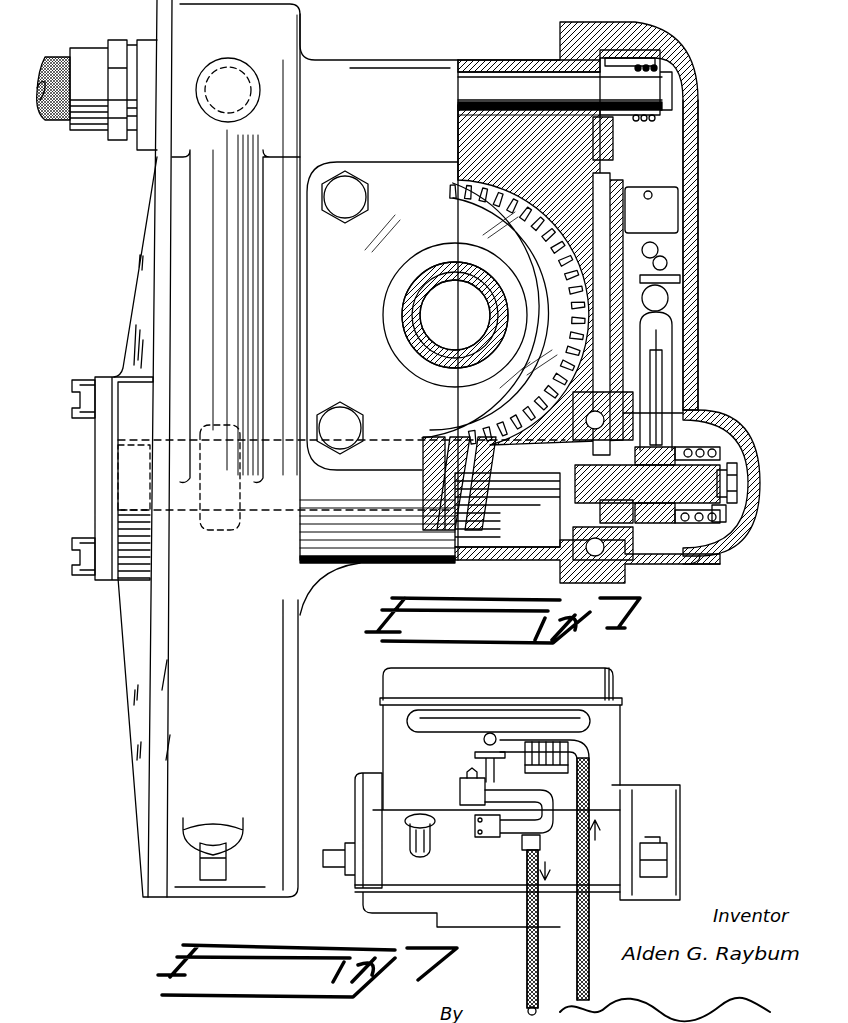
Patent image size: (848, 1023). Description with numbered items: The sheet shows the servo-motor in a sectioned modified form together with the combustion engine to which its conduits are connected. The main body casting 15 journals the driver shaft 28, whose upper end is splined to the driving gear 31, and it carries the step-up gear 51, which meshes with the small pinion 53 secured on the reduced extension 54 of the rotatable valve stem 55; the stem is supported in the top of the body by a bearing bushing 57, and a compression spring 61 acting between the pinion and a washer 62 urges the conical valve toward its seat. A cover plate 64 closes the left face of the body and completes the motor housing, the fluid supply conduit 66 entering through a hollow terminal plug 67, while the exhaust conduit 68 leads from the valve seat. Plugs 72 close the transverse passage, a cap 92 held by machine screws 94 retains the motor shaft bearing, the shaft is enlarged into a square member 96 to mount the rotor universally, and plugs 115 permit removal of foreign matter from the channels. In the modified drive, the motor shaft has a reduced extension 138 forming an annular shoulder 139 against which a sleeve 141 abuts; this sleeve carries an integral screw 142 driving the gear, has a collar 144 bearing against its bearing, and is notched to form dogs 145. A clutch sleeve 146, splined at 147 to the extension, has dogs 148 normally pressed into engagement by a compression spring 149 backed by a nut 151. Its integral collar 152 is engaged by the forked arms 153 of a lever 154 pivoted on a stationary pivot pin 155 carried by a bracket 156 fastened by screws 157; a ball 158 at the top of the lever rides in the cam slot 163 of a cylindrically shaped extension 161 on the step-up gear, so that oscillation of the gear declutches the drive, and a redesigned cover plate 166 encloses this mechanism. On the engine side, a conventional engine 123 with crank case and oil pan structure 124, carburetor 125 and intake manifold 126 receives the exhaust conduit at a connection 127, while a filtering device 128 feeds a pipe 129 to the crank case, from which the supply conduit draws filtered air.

In FIG. 9, the main body casting 15 is at (378, 73).
In FIG. 9, the driver shaft 28 is at (488, 296).
In FIG. 9, the driving gear 31 is at (560, 432).
In FIG. 9, the step-up gear 51 is at (620, 155).
In FIG. 9, the small pinion 53 is at (638, 50).
In FIG. 9, the reduced extension 54 is at (688, 64).
In FIG. 9, the rotatable valve stem 55 is at (560, 97).
In FIG. 9, the bearing bushing 57 is at (506, 68).
In FIG. 9, the compression spring 61 is at (645, 122).
In FIG. 9, the washer 62 is at (670, 86).
In FIG. 9, the cover plate 64 is at (146, 290).
In FIG. 9, the fluid supply conduit 66 is at (66, 58).
In FIG. 7, the fluid supply conduit 66 is at (525, 862).
In FIG. 9, the hollow terminal plug 67 is at (86, 62).
In FIG. 7, the exhaust conduit 68 is at (590, 856).
In FIG. 9, the plugs 72 is at (230, 78).
In FIG. 9, the cap 92 is at (95, 430).
In FIG. 9, the machine screws 94 is at (70, 388).
In FIG. 9, the square member 96 is at (238, 508).
In FIG. 9, the plugs 115 is at (213, 858).
In FIG. 7, the engine 123 is at (605, 778).
In FIG. 7, the crank case and oil pan structure 124 is at (395, 906).
In FIG. 7, the carburetor 125 is at (460, 790).
In FIG. 7, the intake manifold 126 is at (518, 720).
In FIG. 7, the connection 127 is at (482, 740).
In FIG. 7, the filtering device 128 is at (585, 742).
In FIG. 7, the pipe 129 is at (556, 800).
In FIG. 9, the reduced extension 138 is at (695, 447).
In FIG. 9, the annular shoulder 139 is at (420, 445).
In FIG. 9, the sleeve 141 is at (540, 520).
In FIG. 9, the integral screw 142 is at (455, 560).
In FIG. 9, the collar 144 is at (535, 562).
In FIG. 9, the dogs 145 is at (612, 540).
In FIG. 9, the clutch sleeve 146 is at (712, 566).
In FIG. 9, the splines 147 is at (738, 446).
In FIG. 9, the dogs 148 is at (690, 447).
In FIG. 9, the compression spring 149 is at (730, 528).
In FIG. 9, the nut 151 is at (738, 465).
In FIG. 9, the integral collar 152 is at (695, 568).
In FIG. 9, the forked arms 153 is at (672, 370).
In FIG. 9, the lever 154 is at (665, 345).
In FIG. 9, the pivot pin 155 is at (668, 296).
In FIG. 9, the bracket 156 is at (682, 278).
In FIG. 9, the screws 157 is at (395, 368).
In FIG. 9, the ball 158 is at (668, 262).
In FIG. 9, the cylindrically shaped extension 161 is at (668, 195).
In FIG. 9, the cam slot 163 is at (662, 242).
In FIG. 9, the redesigned cover plate 166 is at (700, 100).